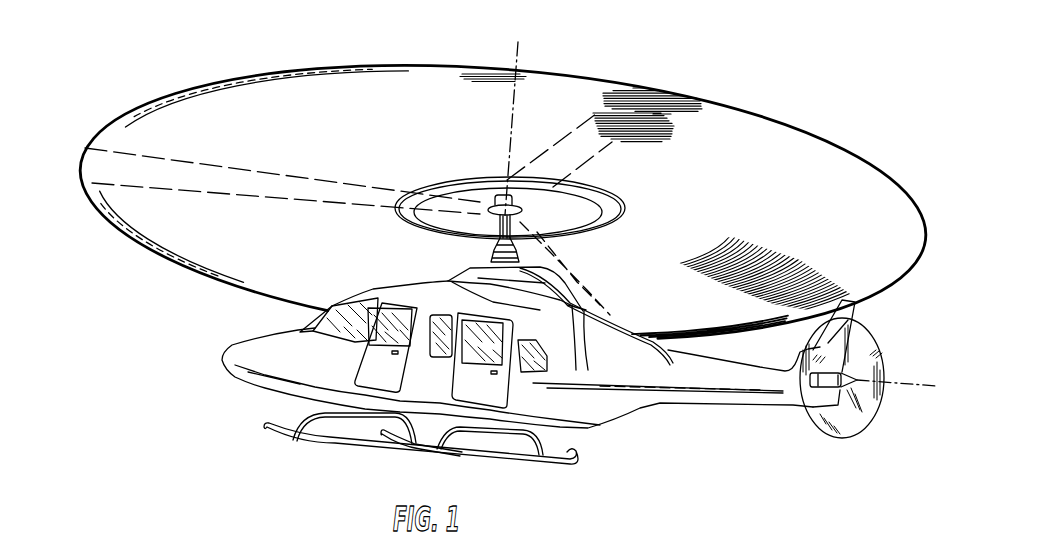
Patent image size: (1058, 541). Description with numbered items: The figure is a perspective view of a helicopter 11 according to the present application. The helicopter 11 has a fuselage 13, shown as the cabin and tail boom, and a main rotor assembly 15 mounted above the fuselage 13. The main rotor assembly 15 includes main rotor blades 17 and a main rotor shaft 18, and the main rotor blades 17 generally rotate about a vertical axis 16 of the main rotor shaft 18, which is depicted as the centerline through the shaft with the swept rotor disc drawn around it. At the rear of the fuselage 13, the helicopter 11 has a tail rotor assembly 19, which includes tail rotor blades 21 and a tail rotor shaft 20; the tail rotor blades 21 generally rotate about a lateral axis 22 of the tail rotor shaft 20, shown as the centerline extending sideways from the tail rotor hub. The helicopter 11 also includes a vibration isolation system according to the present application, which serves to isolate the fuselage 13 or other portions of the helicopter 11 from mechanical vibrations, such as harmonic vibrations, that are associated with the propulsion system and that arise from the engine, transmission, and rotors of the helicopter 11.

The helicopter 11 is at (697, 80).
The fuselage 13 is at (272, 390).
The main rotor assembly 15 is at (562, 249).
The vertical axis 16 is at (511, 141).
The main rotor blades 17 is at (240, 169).
The main rotor shaft 18 is at (490, 227).
The tail rotor assembly 19 is at (848, 447).
The tail rotor shaft 20 is at (818, 387).
The tail rotor blades 21 is at (860, 348).
The lateral axis 22 is at (902, 386).